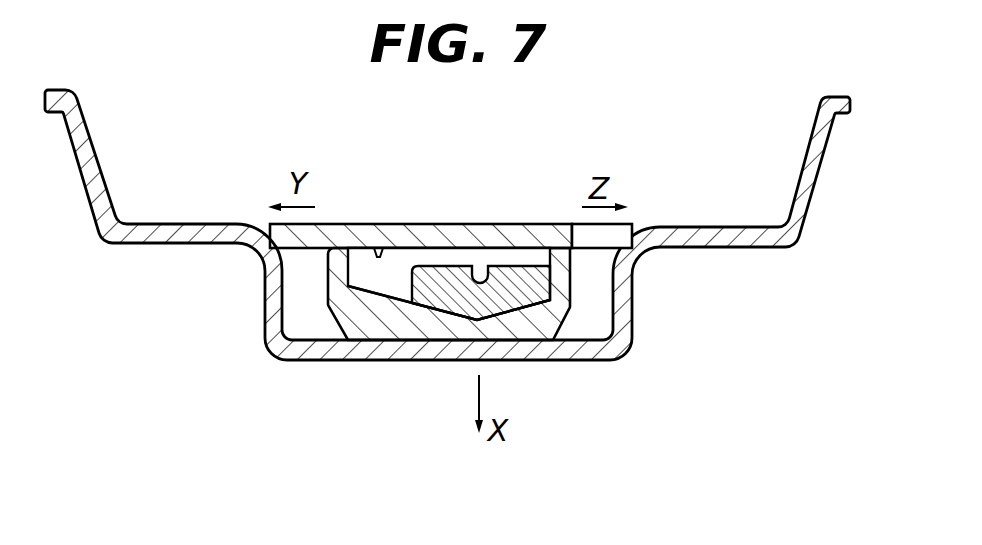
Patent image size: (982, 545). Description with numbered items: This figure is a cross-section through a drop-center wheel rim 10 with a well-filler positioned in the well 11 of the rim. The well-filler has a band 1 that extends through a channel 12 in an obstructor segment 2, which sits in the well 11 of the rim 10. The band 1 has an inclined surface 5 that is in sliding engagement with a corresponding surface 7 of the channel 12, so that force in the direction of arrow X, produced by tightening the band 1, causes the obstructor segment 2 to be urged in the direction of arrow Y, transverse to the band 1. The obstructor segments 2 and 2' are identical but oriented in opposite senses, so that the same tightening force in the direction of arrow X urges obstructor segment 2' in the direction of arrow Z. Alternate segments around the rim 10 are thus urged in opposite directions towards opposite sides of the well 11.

The band 1 is at (523, 297).
The obstructor segment 2 is at (393, 208).
The obstructor segment 2' is at (645, 204).
The inclined surface 5 is at (420, 305).
The corresponding surface 7 is at (363, 294).
The drop-center wheel rim 10 is at (155, 232).
The well 11 is at (302, 314).
The channel 12 is at (358, 274).